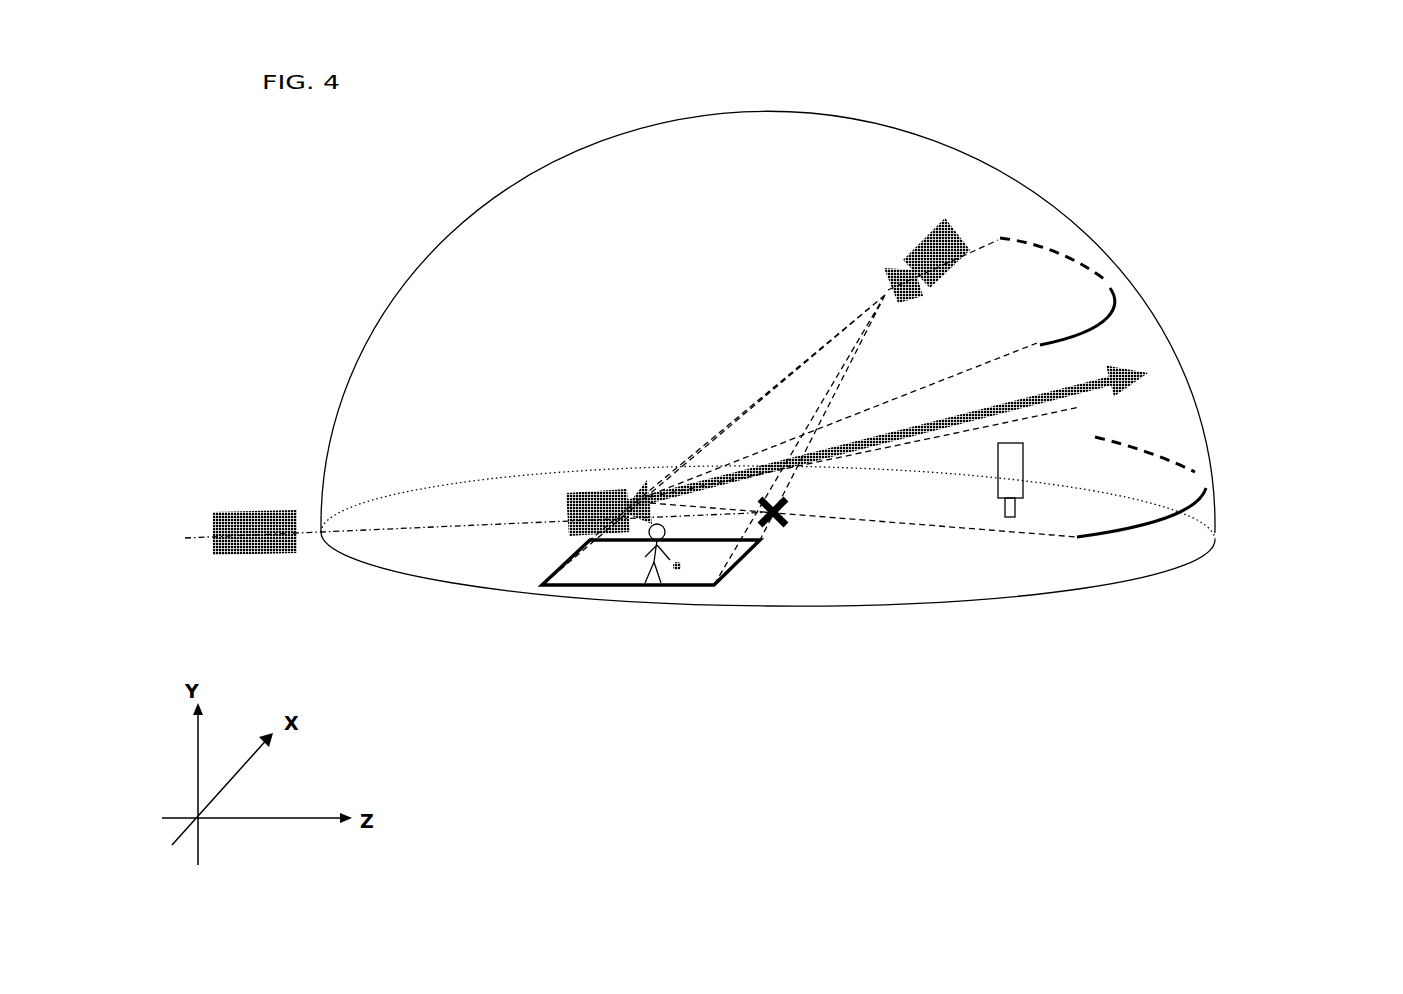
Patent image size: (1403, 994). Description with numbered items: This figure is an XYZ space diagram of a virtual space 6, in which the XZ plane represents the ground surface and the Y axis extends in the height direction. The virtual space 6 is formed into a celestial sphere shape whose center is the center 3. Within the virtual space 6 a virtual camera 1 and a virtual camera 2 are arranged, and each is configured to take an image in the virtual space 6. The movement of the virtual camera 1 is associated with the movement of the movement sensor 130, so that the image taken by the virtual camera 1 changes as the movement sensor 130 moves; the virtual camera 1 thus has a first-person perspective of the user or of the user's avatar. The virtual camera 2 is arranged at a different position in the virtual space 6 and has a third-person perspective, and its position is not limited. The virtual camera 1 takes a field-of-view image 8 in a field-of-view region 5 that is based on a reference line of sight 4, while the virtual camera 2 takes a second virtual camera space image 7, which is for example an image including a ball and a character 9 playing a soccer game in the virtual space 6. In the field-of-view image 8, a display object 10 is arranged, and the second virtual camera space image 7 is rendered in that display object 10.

The virtual space 6 is at (897, 99).
The virtual camera 2 is at (958, 232).
The virtual camera 1 is at (590, 493).
The movement sensor 130 is at (260, 510).
The field-of-view region 5 is at (1183, 387).
The field-of-view image 8 is at (1170, 430).
The reference line of sight 4 is at (903, 430).
The center 3 is at (783, 520).
The second virtual camera space image 7 is at (565, 588).
The character 9 is at (657, 566).
The display object 10 is at (1013, 520).